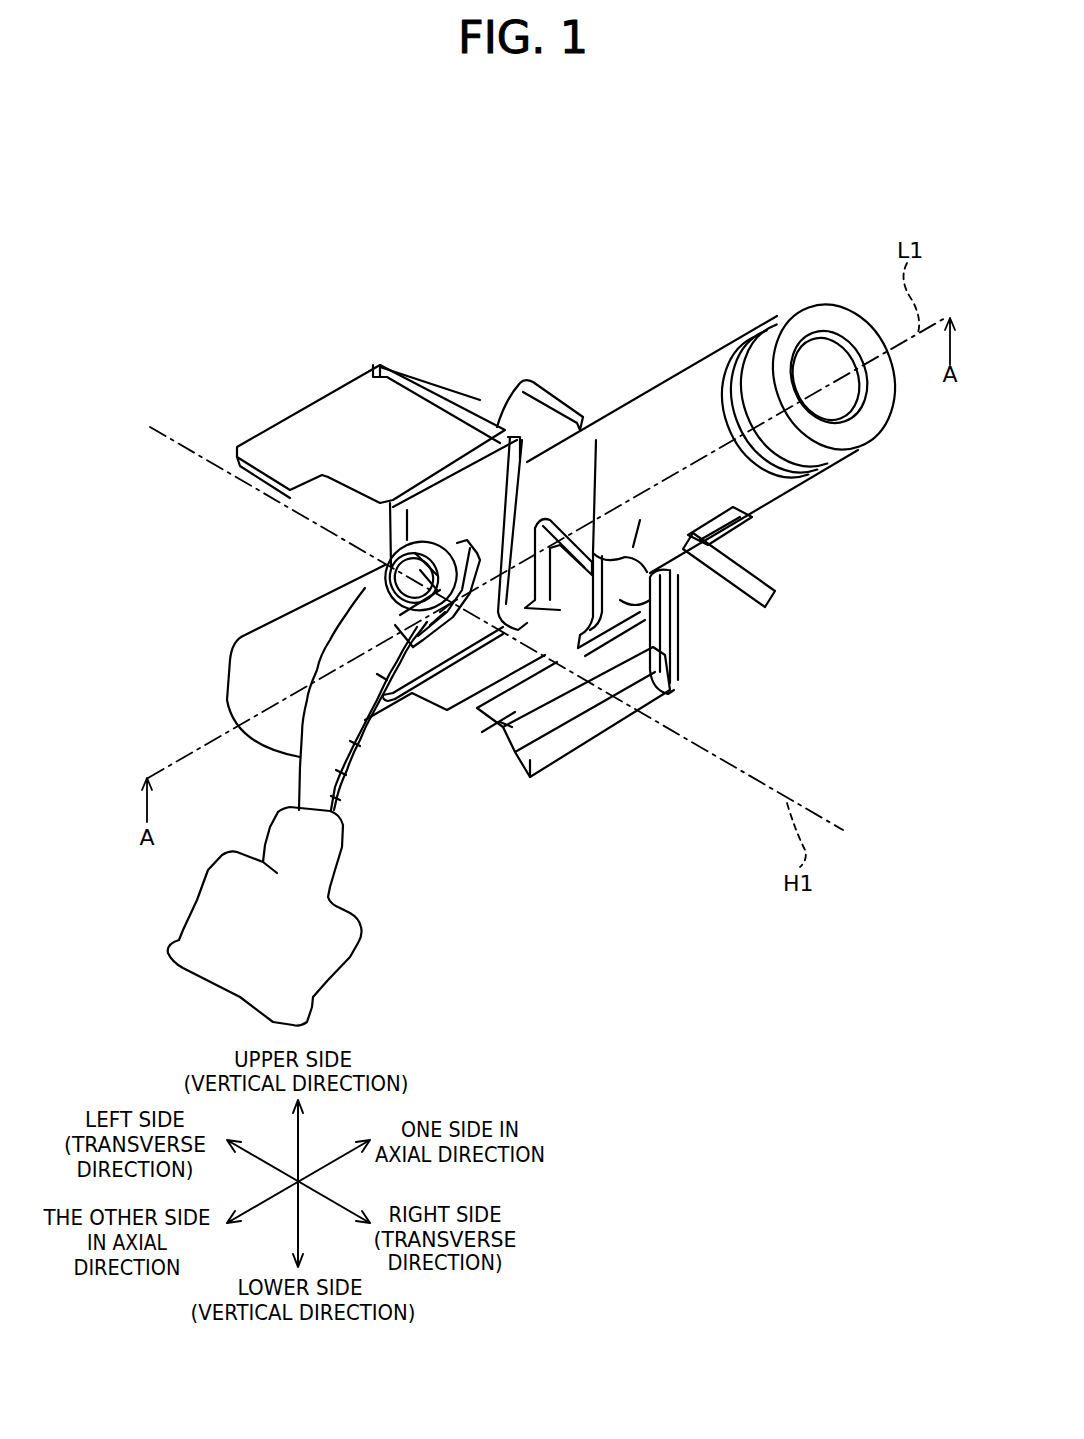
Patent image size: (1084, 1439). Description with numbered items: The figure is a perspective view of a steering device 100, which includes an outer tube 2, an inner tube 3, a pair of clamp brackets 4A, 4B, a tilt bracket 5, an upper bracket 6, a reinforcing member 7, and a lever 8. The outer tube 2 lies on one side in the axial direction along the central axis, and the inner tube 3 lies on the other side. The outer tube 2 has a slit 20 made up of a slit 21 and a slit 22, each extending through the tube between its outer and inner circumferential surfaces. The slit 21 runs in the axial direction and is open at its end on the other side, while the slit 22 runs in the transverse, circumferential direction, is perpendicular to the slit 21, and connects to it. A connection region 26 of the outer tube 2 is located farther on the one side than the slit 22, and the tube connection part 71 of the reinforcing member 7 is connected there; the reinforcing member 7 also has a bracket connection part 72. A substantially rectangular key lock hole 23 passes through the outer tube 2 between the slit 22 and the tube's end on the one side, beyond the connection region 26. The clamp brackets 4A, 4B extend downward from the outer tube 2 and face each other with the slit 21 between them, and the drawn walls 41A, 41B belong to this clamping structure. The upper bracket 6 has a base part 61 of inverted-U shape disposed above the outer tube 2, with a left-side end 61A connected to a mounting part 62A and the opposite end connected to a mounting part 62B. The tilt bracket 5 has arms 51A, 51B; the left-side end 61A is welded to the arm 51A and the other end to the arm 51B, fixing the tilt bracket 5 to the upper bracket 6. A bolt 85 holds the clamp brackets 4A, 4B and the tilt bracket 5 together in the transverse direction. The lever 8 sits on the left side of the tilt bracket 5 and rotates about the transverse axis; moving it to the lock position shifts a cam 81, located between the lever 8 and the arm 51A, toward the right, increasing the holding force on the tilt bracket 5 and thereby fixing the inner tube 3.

The steering device 100 is at (756, 242).
The outer tube 2 is at (680, 407).
The slit 20 is at (590, 600).
The slit 21 is at (663, 590).
The slit 22 is at (596, 440).
The key lock hole 23 is at (720, 520).
The connection region 26 is at (633, 547).
The inner tube 3 is at (243, 678).
The clamp bracket 4A is at (427, 722).
The clamp bracket 4B is at (658, 694).
The first upright wall 41A is at (527, 540).
The second upright wall 41B is at (673, 657).
The tilt bracket 5 is at (367, 516).
The arm 51A is at (407, 510).
The arm 51B is at (567, 738).
The upper bracket 6 is at (556, 368).
The base part 61 is at (490, 413).
The left-side end 61A is at (480, 390).
The mounting part 62A is at (352, 408).
The mounting part 62B is at (750, 597).
The reinforcing member 7 is at (484, 751).
The tube connection part 71 is at (623, 607).
The bracket connection part 72 is at (508, 717).
The lever 8 is at (312, 943).
The cam 81 is at (467, 553).
The bolt 85 is at (390, 580).